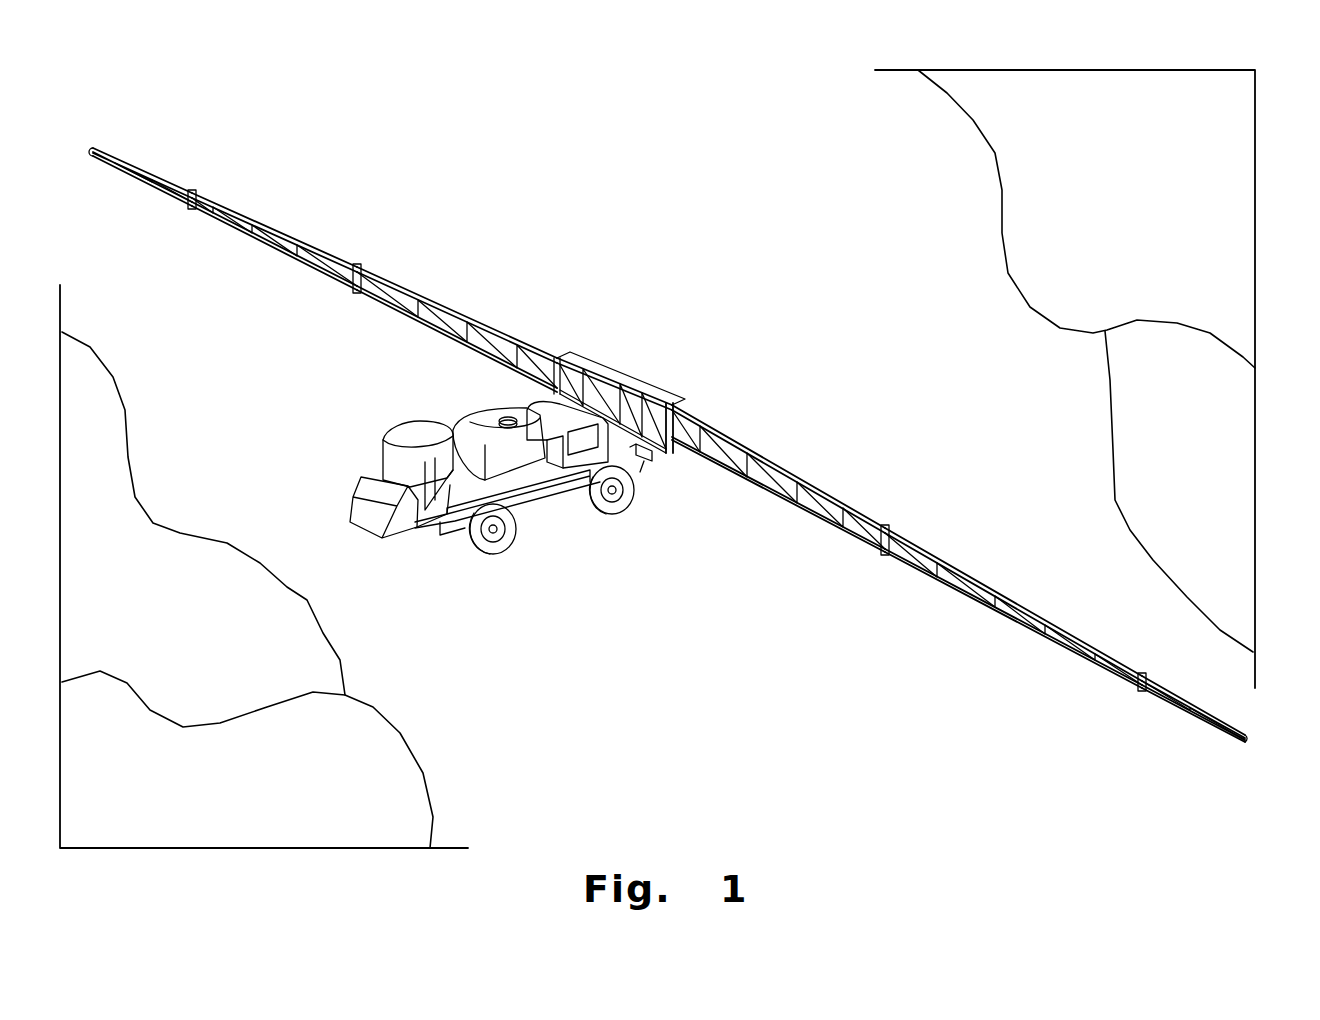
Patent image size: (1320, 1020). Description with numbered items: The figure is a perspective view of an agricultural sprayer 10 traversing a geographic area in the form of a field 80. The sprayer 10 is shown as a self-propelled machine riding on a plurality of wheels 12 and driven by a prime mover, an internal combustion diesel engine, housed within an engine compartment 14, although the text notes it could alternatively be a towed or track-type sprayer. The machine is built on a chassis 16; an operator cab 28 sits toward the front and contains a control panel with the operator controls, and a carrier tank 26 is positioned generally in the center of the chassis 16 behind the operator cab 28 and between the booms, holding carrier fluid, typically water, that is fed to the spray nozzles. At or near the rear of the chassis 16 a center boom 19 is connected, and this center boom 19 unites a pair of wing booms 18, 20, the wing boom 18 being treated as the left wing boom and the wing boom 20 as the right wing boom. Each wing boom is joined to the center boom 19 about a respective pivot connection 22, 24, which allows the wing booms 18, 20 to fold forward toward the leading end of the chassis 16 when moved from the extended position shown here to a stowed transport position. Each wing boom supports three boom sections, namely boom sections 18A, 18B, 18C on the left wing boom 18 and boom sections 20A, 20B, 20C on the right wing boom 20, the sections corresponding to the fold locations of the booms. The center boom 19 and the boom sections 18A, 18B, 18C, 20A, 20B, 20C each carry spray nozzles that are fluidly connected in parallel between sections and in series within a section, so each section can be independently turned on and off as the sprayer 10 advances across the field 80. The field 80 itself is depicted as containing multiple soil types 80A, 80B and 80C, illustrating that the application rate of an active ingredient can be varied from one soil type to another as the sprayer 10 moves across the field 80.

The agricultural sprayer 10 is at (650, 276).
The wheels 12 is at (620, 518).
The engine compartment 14 is at (622, 450).
The chassis 16 is at (527, 512).
The wing boom 18 is at (872, 496).
The boom section 18A is at (815, 522).
The boom section 18B is at (1000, 625).
The boom section 18C is at (1190, 710).
The center boom 19 is at (637, 393).
The wing boom 20 is at (387, 262).
The boom section 20A is at (422, 328).
The boom section 20B is at (286, 258).
The boom section 20C is at (143, 185).
The pivot connection 22 is at (668, 388).
The pivot connection 24 is at (619, 363).
The carrier tank 26 is at (478, 440).
The operator cab 28 is at (395, 440).
The field 80 is at (679, 483).
The soil type 80A is at (235, 804).
The soil type 80B is at (200, 606).
The soil type 80C is at (1147, 213).